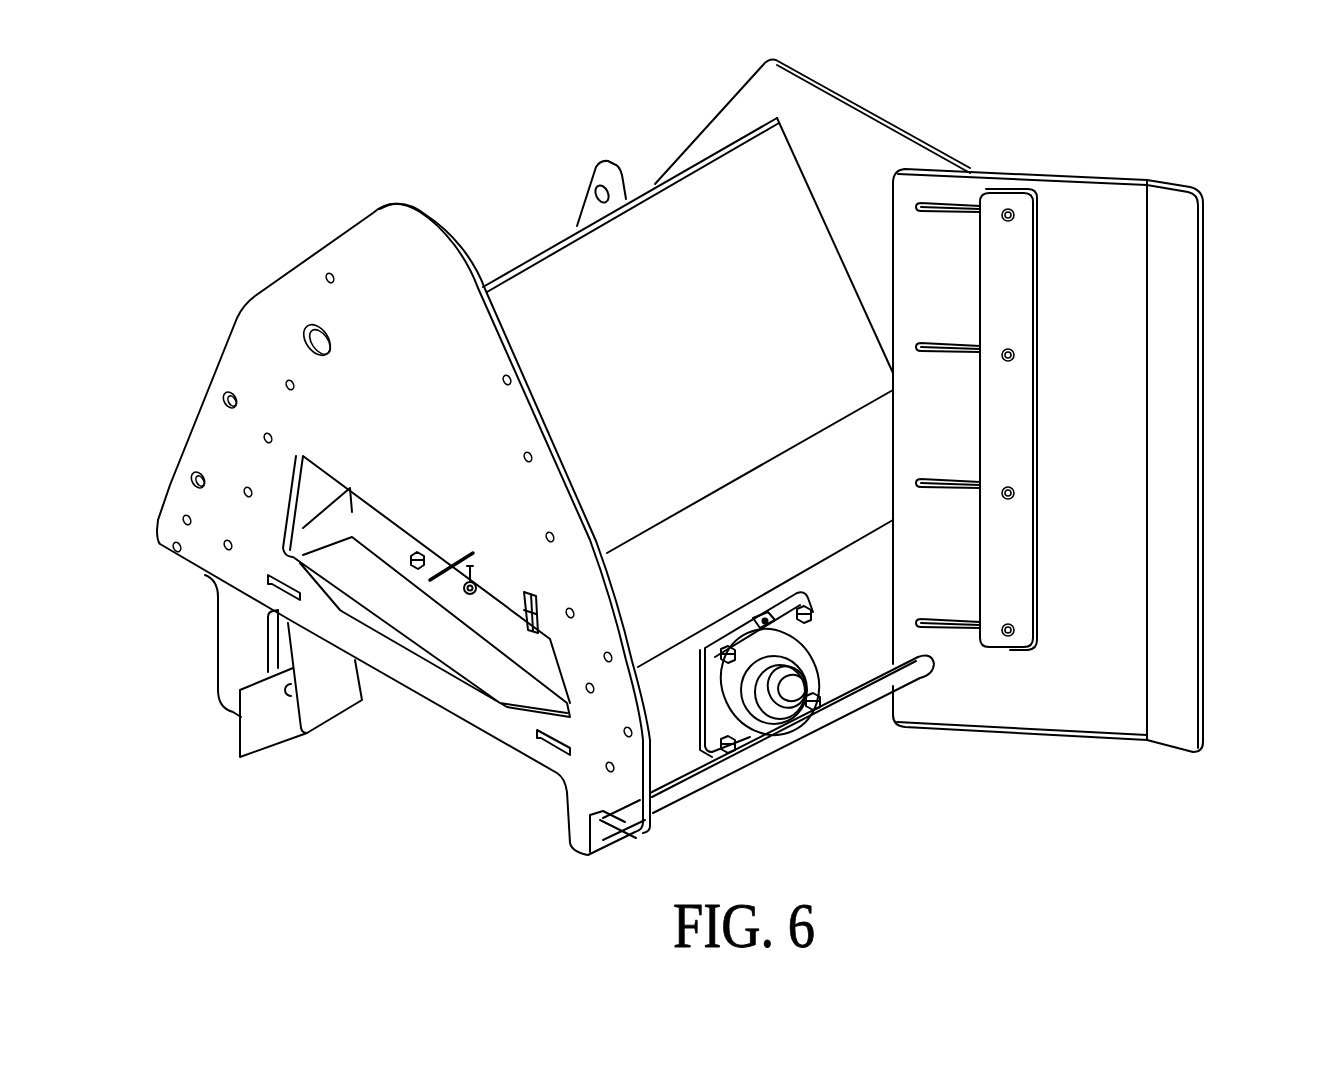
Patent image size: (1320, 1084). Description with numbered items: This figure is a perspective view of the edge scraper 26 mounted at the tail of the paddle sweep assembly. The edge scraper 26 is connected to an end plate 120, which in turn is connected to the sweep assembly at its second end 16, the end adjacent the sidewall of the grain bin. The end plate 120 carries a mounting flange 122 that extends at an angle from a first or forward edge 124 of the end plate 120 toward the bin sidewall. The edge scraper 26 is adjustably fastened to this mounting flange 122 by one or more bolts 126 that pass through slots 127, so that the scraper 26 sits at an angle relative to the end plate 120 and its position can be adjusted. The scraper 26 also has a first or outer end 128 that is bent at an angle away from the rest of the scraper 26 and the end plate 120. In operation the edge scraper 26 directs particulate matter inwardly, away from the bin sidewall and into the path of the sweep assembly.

The second end 16 is at (261, 260).
The edge scraper 26 is at (1068, 426).
The end plate 120 is at (845, 127).
The mounting flange 122 is at (1003, 172).
The forward edge 124 is at (978, 167).
The bolts 126 is at (1014, 360).
The slots 127 is at (950, 343).
The outer end 128 is at (1170, 188).